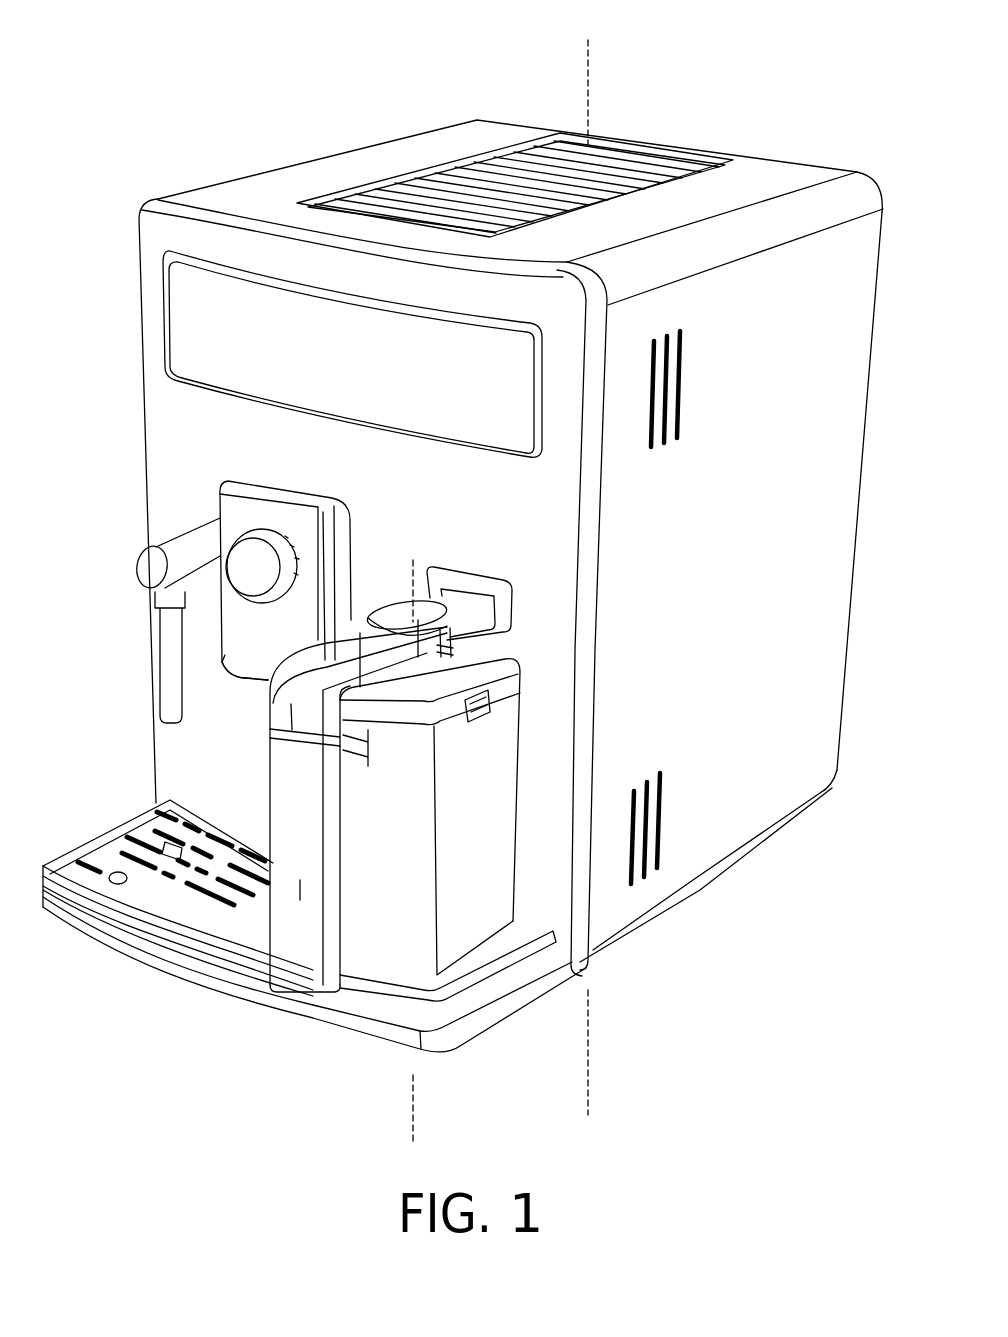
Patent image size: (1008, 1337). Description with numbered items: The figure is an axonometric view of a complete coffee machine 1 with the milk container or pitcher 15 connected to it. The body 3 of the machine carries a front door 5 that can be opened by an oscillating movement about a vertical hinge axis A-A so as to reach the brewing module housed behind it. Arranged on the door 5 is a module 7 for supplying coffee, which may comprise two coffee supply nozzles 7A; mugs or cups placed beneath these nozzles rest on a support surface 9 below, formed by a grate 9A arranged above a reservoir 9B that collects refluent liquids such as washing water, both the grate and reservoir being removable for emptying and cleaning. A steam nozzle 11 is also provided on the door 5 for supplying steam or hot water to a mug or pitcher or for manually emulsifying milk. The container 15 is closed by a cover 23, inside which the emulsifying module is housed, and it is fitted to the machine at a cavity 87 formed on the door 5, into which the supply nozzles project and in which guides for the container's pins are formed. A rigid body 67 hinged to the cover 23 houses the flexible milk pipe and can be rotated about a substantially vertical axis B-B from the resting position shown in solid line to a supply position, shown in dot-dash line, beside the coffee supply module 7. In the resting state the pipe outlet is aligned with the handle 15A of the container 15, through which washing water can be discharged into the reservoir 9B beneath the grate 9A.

The coffee machine 1 is at (428, 114).
The body 3 is at (747, 588).
The front door 5 is at (556, 485).
The module for supplying coffee 7 is at (309, 527).
The coffee supply nozzles 7A is at (247, 678).
The support surface 9 is at (128, 802).
The grate 9A is at (100, 864).
The reservoir 9B is at (228, 985).
The steam nozzle 11 is at (172, 671).
The container or pitcher 15 is at (505, 783).
The handle 15A is at (303, 885).
The cover 23 is at (457, 588).
The rigid body 67 is at (293, 673).
The cavity 87 is at (503, 637).
The vertical hinge axis A is at (587, 577).
The substantially vertical axis B is at (412, 850).